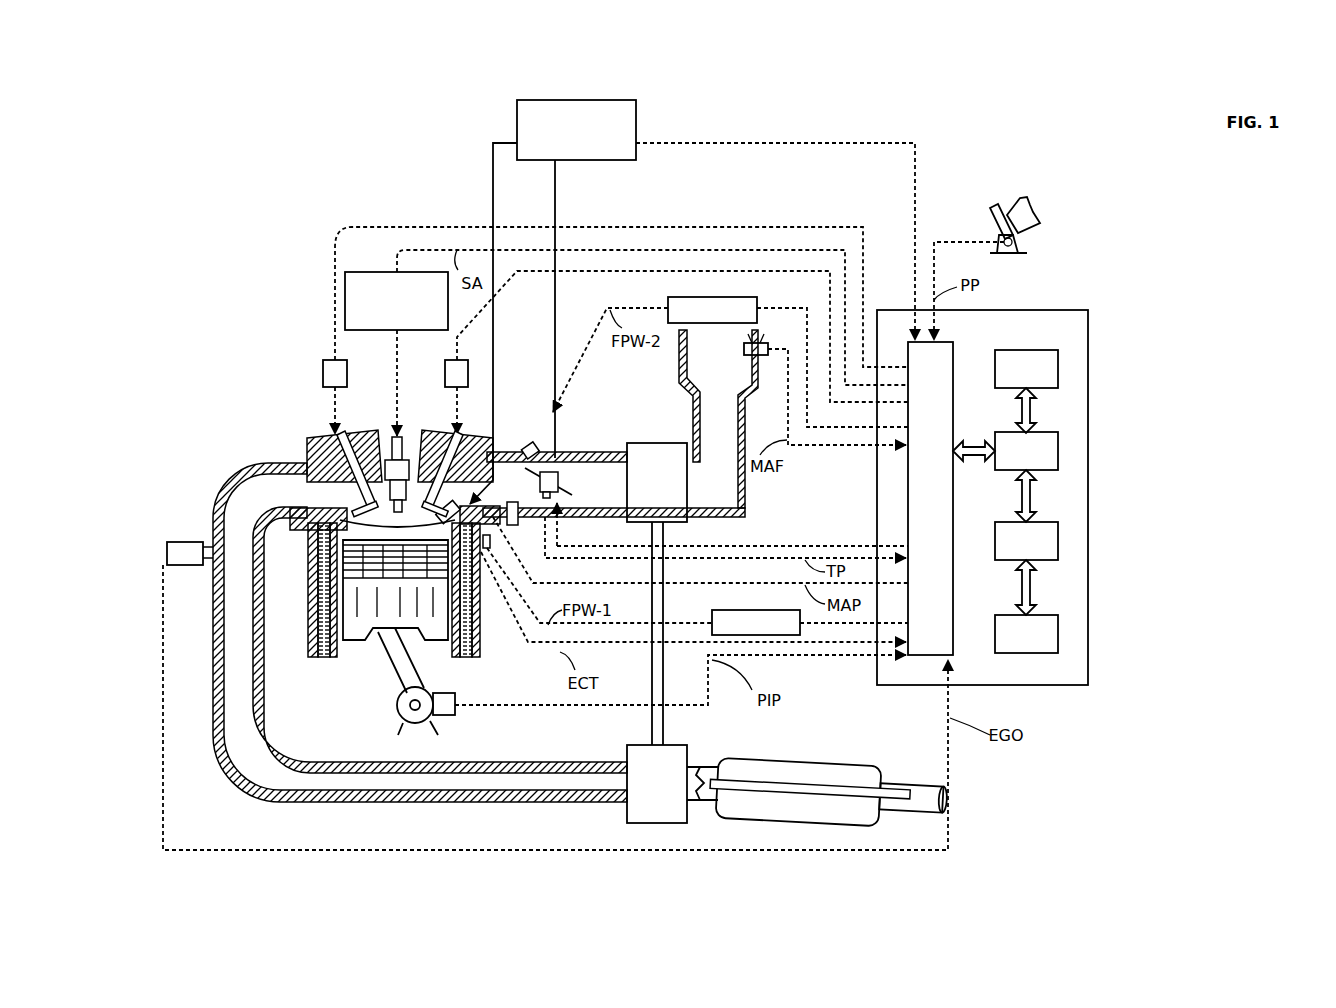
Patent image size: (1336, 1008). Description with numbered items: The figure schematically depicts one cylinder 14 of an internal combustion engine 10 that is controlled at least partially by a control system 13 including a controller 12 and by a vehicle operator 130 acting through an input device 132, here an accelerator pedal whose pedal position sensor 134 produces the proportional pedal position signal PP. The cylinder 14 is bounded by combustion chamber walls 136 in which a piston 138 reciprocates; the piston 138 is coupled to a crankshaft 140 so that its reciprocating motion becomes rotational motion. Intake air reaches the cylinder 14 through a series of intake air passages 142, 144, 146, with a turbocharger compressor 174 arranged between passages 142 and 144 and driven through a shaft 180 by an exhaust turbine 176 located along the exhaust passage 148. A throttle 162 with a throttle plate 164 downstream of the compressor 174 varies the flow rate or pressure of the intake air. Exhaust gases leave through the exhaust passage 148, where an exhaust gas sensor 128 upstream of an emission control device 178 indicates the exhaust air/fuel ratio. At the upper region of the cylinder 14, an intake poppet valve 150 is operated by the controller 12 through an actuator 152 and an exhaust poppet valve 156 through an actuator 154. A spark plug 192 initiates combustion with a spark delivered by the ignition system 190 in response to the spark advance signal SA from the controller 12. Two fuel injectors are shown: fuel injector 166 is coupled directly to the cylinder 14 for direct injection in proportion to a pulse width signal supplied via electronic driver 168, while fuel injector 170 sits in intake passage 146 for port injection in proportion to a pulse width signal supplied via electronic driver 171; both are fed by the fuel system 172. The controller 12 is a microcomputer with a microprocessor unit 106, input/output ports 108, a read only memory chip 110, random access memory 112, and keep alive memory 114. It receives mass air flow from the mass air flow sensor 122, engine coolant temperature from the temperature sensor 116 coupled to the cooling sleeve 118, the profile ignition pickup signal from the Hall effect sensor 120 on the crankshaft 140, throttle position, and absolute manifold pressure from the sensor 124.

The internal combustion engine 10 is at (250, 390).
The controller 12 is at (1088, 315).
The control system 13 is at (1172, 383).
The cylinder 14 is at (315, 541).
The microprocessor unit 106 is at (1058, 446).
The input/output ports 108 is at (953, 346).
The read only memory chip 110 is at (1058, 362).
The random access memory 112 is at (1058, 536).
The keep alive memory 114 is at (1058, 628).
The temperature sensor 116 is at (478, 598).
The cooling sleeve 118 is at (470, 588).
The Hall effect sensor 120 is at (455, 715).
The mass air flow sensor 122 is at (766, 343).
The manifold pressure sensor 124 is at (512, 526).
The exhaust gas sensor 128 is at (167, 547).
The vehicle operator 130 is at (1035, 207).
The input device 132 is at (993, 214).
The pedal position sensor 134 is at (1020, 243).
The combustion chamber walls 136 is at (345, 645).
The piston 138 is at (383, 612).
The crankshaft 140 is at (402, 722).
The intake air passage 142 is at (733, 372).
The intake air passage 144 is at (612, 494).
The intake air passage 146 is at (497, 494).
The exhaust passage 148 is at (270, 499).
The intake poppet valve 150 is at (427, 465).
The actuator 152 is at (445, 372).
The actuator 154 is at (322, 370).
The exhaust poppet valve 156 is at (315, 462).
The throttle 162 is at (553, 468).
The throttle plate 164 is at (520, 455).
The fuel injector 166 is at (456, 505).
The electronic driver 168 is at (715, 610).
The fuel injector 170 is at (538, 448).
The electronic driver 171 is at (670, 298).
The fuel system 172 is at (636, 104).
The compressor 174 is at (640, 443).
The exhaust turbine 176 is at (627, 815).
The emission control device 178 is at (800, 758).
The shaft 180 is at (665, 720).
The ignition system 190 is at (360, 272).
The spark plug 192 is at (391, 440).